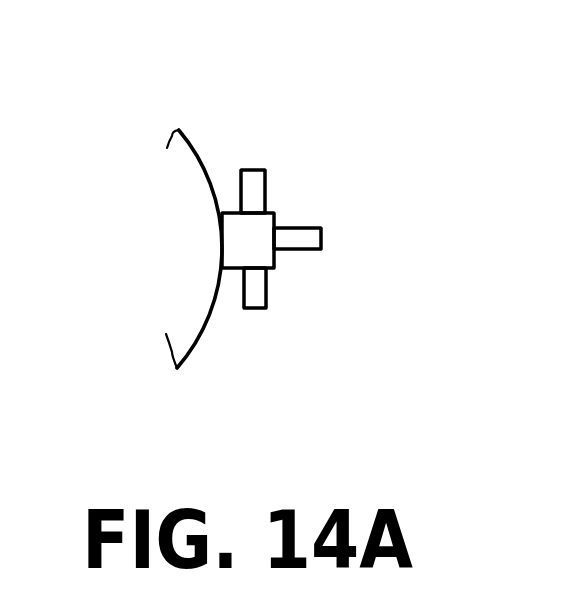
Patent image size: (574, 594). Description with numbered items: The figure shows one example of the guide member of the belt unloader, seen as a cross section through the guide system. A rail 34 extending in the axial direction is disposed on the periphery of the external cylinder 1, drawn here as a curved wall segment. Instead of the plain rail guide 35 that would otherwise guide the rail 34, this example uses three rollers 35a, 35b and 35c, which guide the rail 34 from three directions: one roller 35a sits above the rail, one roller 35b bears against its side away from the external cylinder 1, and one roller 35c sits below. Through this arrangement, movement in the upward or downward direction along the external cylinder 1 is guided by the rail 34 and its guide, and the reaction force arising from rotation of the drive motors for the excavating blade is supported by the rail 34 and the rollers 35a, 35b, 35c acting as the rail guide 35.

The external cylinder 1 is at (193, 148).
The rail 34 is at (240, 239).
The rail guide 35 is at (308, 214).
The roller 35a is at (250, 182).
The roller 35b is at (298, 240).
The roller 35c is at (254, 302).